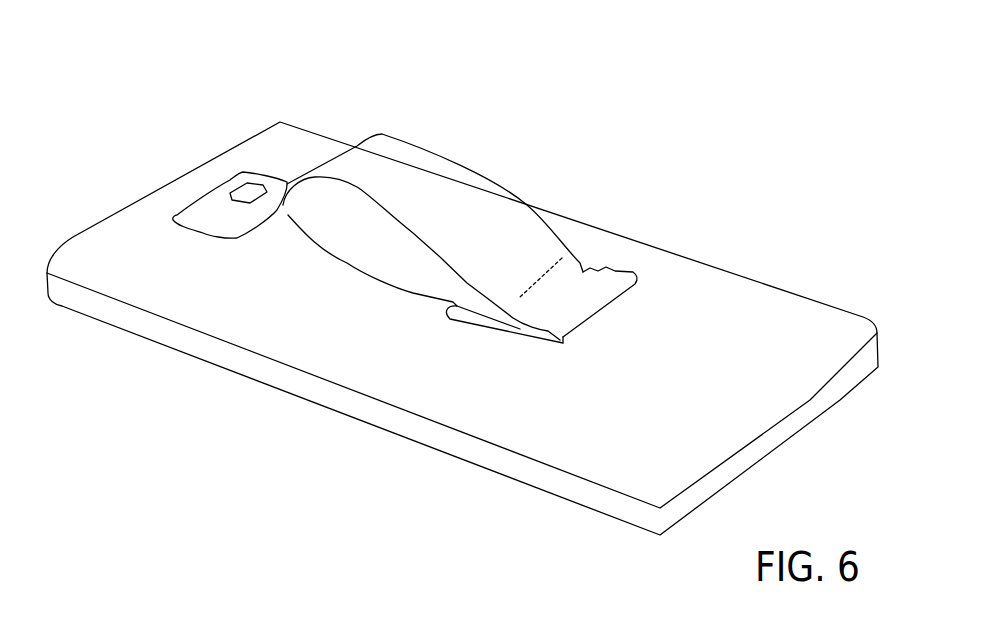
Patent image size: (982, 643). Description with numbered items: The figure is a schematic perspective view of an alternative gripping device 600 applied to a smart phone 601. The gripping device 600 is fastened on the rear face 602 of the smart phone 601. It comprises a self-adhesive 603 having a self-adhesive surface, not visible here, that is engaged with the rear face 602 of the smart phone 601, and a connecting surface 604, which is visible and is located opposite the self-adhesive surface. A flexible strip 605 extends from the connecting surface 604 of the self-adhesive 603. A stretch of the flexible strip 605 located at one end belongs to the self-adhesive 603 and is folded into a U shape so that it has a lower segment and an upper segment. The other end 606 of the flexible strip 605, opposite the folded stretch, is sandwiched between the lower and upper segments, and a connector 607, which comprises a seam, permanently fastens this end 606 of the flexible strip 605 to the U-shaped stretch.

The alternative gripping device 600 is at (107, 77).
The smart phone 601 is at (303, 427).
The rear face 602 is at (722, 298).
The self-adhesive 603 is at (585, 343).
The connecting surface 604 is at (585, 272).
The flexible strip 605 is at (483, 197).
The end of the flexible strip 606 is at (518, 328).
The connector 607 is at (543, 273).